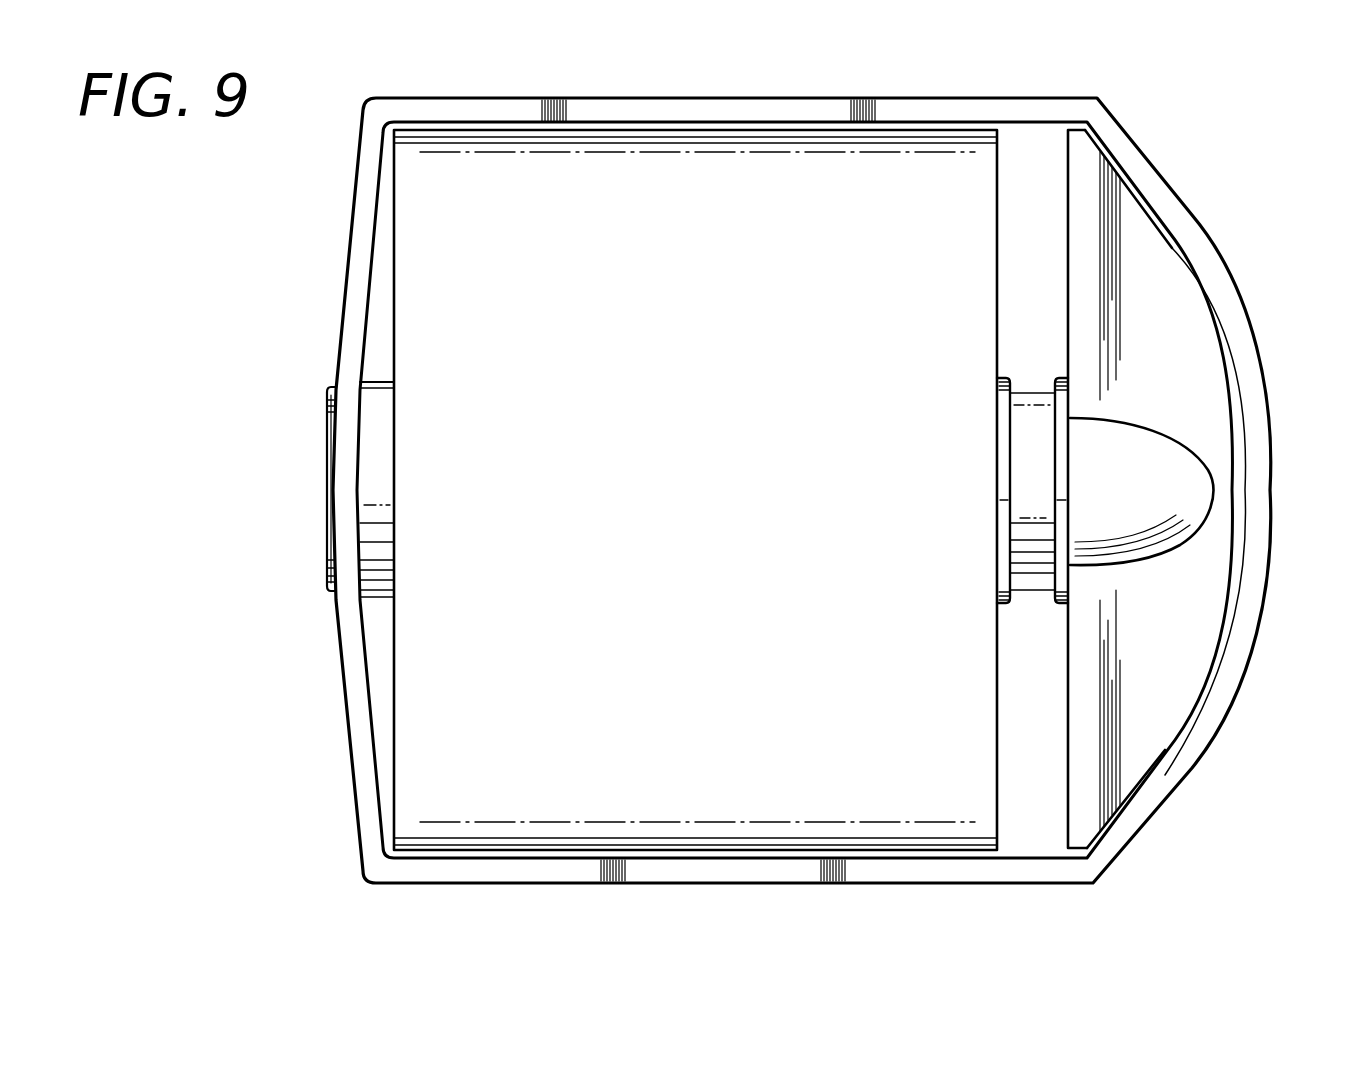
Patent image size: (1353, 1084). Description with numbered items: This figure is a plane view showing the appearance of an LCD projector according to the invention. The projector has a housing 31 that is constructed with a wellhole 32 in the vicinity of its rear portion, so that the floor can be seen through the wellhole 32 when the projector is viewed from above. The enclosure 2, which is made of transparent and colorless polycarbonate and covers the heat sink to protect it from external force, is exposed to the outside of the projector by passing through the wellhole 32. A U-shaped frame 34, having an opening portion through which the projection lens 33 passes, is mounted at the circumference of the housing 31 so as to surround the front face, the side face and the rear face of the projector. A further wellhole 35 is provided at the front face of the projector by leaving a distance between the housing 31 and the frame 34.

The enclosure 2 is at (1040, 457).
The housing 31 is at (1083, 185).
The wellhole 32 is at (1033, 780).
The projection lens 33 is at (325, 486).
The U-shaped frame 34 is at (494, 108).
The wellhole 35 is at (378, 262).